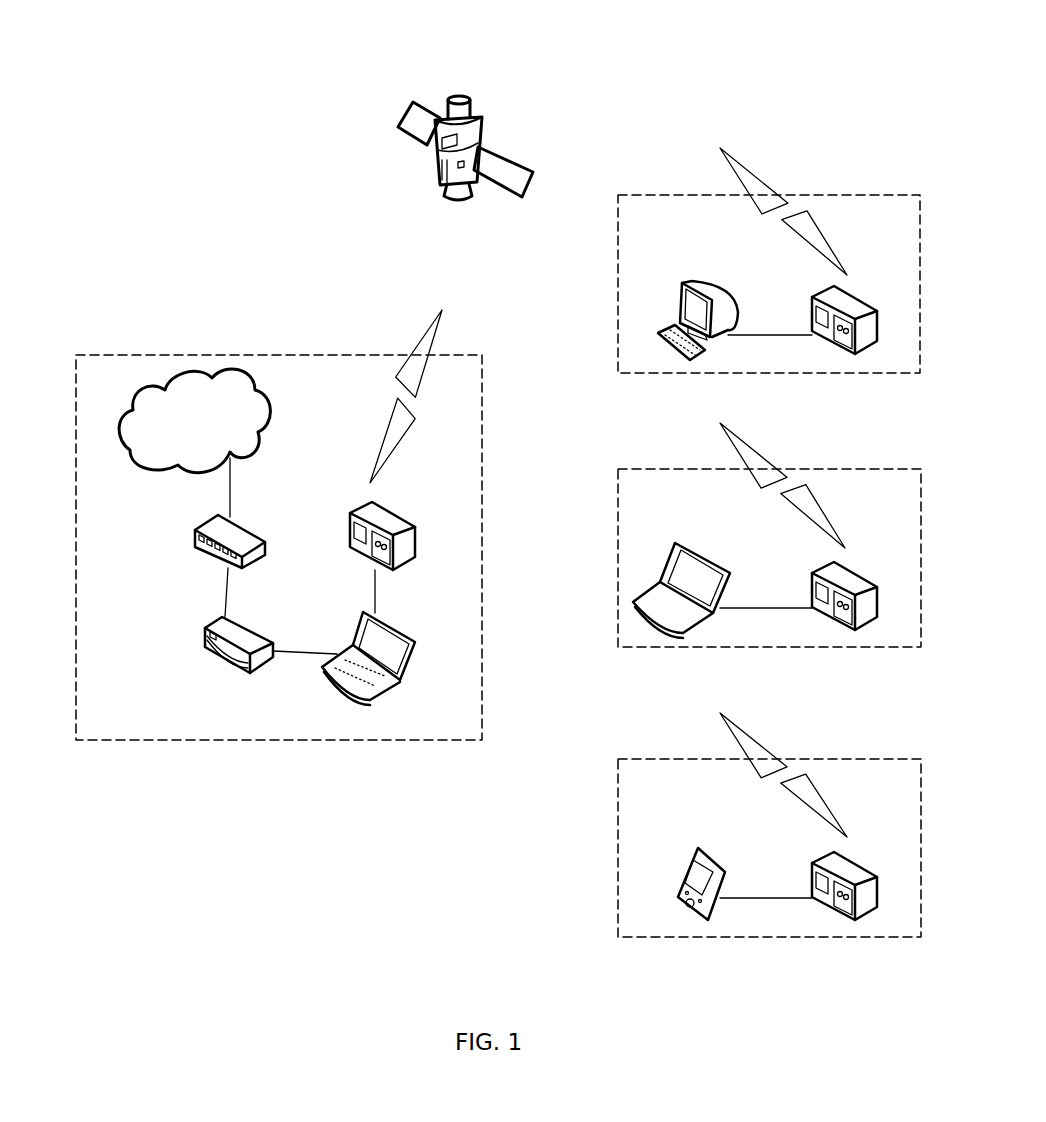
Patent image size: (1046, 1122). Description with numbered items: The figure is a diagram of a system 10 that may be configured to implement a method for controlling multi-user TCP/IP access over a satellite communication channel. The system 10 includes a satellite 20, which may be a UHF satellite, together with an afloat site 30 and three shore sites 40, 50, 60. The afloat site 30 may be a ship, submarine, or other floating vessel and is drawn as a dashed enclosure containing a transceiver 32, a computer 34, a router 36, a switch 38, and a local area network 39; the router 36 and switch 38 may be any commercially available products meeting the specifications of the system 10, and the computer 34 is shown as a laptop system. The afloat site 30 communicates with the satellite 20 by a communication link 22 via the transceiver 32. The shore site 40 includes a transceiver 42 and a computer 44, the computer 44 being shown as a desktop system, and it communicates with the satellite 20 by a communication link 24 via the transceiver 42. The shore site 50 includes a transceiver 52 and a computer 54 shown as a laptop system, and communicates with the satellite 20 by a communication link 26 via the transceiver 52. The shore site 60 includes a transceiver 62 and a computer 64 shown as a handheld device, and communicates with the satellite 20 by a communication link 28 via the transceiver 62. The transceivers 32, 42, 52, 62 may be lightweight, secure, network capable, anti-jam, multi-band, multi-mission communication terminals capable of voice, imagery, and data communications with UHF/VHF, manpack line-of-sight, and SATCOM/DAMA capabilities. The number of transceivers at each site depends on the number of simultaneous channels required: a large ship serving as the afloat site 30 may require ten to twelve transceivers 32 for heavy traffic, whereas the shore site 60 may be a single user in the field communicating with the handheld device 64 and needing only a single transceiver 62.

The system 10 is at (634, 96).
The satellite 20 is at (402, 117).
The communication link 22 is at (430, 352).
The communication link 24 is at (748, 168).
The communication link 26 is at (777, 460).
The communication link 28 is at (767, 745).
The afloat site 30 is at (112, 355).
The transceiver 32 is at (343, 523).
The computer 34 is at (418, 637).
The router 36 is at (210, 653).
The switch 38 is at (210, 558).
The local area network (LAN) 39 is at (187, 378).
The shore site 40 is at (870, 194).
The transceiver 42 is at (862, 292).
The computer 44 is at (688, 310).
The shore site 50 is at (617, 540).
The transceiver 52 is at (877, 577).
The computer 54 is at (675, 547).
The shore site 60 is at (617, 820).
The transceiver 62 is at (860, 850).
The computer 64 is at (693, 848).